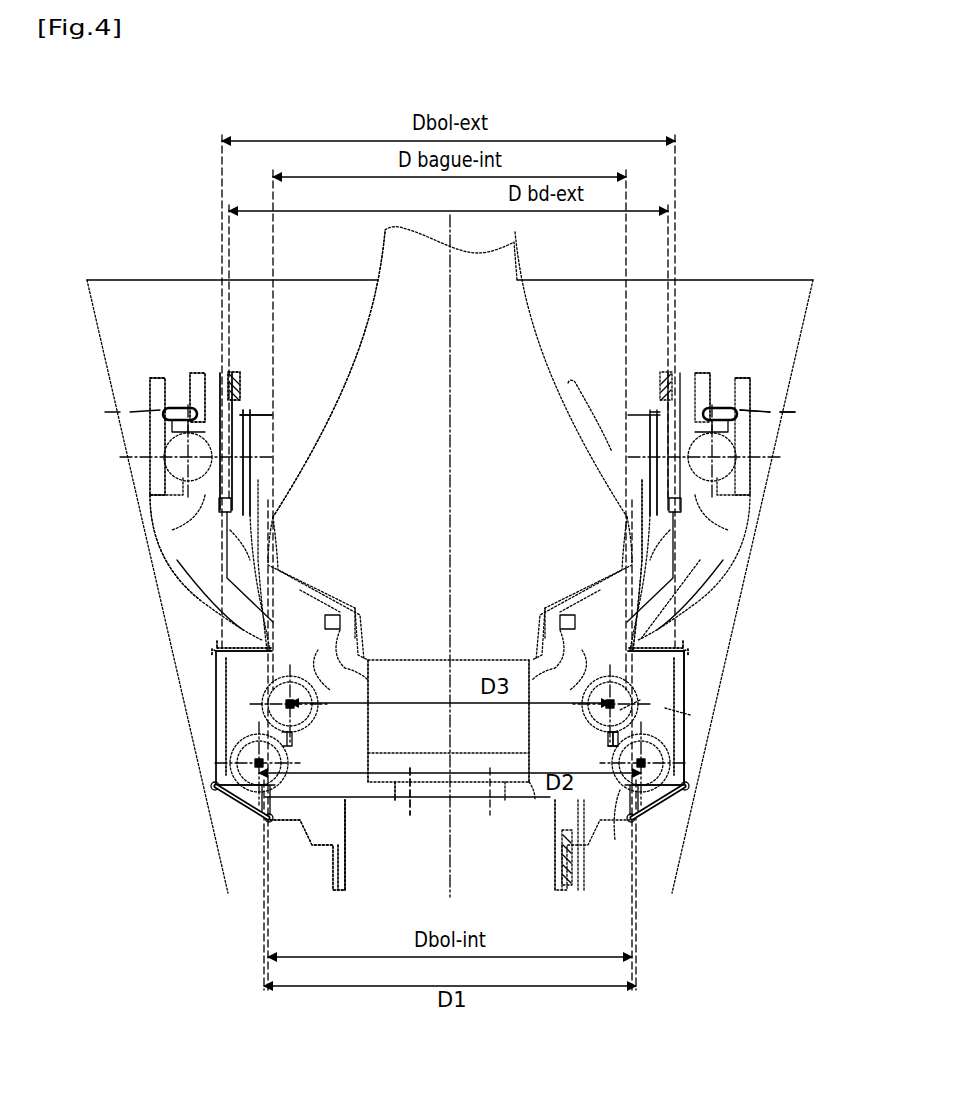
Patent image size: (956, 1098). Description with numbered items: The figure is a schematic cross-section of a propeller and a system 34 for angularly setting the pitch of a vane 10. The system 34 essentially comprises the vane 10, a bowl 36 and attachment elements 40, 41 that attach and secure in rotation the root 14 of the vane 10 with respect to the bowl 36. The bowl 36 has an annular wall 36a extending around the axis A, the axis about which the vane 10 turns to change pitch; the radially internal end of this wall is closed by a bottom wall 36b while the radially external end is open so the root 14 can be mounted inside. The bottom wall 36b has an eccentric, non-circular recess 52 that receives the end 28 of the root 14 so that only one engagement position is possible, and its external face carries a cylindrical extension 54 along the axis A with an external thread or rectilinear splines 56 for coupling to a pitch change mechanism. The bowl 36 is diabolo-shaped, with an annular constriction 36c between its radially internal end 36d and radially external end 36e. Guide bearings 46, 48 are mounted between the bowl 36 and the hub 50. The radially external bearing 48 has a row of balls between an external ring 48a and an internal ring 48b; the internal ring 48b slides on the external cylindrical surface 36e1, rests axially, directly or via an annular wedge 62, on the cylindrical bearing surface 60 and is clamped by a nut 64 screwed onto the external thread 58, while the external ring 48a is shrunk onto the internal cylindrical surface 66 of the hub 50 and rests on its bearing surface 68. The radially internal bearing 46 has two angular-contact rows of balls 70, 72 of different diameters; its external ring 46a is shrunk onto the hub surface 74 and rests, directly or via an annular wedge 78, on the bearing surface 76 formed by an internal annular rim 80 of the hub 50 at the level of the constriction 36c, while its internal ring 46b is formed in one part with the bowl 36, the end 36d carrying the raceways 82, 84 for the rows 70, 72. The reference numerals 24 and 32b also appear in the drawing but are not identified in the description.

The vane 10 is at (548, 293).
The root 14 is at (362, 330).
The trailing edge of blade 24 is at (528, 334).
The end 28 is at (410, 790).
The platform 32b is at (582, 462).
The system 34 is at (315, 335).
The bowl 36 is at (603, 840).
The annular wall 36a is at (665, 575).
The bottom wall 36b is at (535, 798).
The annular constriction 36c is at (365, 678).
The radially internal end 36d is at (255, 840).
The radially external end 36e is at (282, 400).
The external cylindrical surface 36e1 is at (272, 450).
The attachment element 40 is at (577, 386).
The attachment element 41 is at (358, 605).
The radially internal guide bearing 46 is at (668, 810).
The external ring 46a is at (230, 700).
The internal ring 46b is at (335, 815).
The radially external guide bearing 48 is at (770, 362).
The external ring 48a is at (163, 385).
The internal ring 48b is at (200, 370).
The hub 50 is at (750, 438).
The recess 52 is at (383, 735).
The cylindrical extension 54 is at (580, 880).
The external thread or external rectilinear splines 56 is at (575, 868).
The external thread 58 is at (235, 380).
The cylindrical bearing surface 60 is at (272, 494).
The annular wedge 62 is at (692, 515).
The nut 64 is at (675, 370).
The internal cylindrical surface 66 is at (165, 455).
The cylindrical bearing surface 68 is at (205, 500).
The row of balls 70 is at (678, 752).
The row of balls 72 is at (640, 678).
The internal cylindrical surface 74 is at (668, 708).
The cylindrical bearing surface 76 is at (650, 637).
The annular wedge 78 is at (688, 648).
The internal annular rim 80 is at (245, 635).
The raceway 82 is at (610, 845).
The raceway 84 is at (590, 735).
The axis A is at (468, 568).